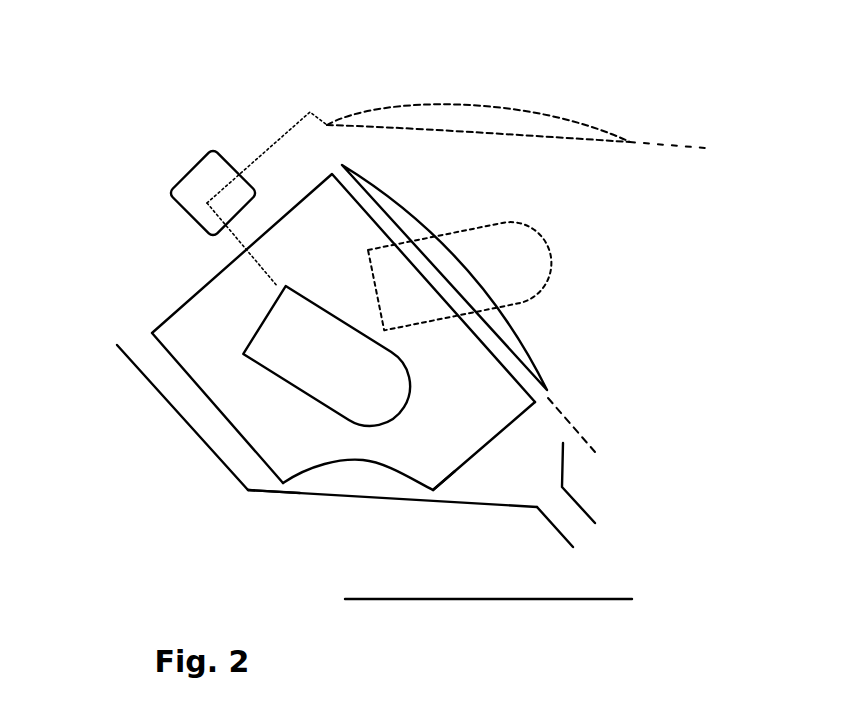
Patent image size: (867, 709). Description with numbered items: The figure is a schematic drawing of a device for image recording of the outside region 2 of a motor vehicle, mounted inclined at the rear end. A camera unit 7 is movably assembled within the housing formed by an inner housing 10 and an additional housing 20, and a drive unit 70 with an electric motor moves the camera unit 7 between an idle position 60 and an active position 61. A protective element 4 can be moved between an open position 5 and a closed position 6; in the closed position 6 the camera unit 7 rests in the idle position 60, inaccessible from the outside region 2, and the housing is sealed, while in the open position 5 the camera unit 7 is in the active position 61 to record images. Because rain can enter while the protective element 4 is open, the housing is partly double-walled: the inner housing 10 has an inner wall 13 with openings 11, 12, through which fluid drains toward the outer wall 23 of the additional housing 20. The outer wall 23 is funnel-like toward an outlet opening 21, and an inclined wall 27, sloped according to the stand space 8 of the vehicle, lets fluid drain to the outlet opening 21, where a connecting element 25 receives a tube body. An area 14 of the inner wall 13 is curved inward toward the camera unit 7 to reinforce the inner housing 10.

The outside region 2 is at (662, 49).
The protective element 4 is at (473, 135).
The open position 5 is at (675, 148).
The closed position 6 is at (582, 433).
The camera unit 7 is at (380, 307).
The stand space 8 is at (613, 598).
The inner housing 10 is at (200, 393).
The opening 11 is at (277, 492).
The opening 12 is at (433, 493).
The inner wall 13 is at (462, 473).
The area 14 is at (360, 461).
The additional housing 20 is at (230, 475).
The outlet opening 21 is at (553, 508).
The outer wall 23 is at (496, 498).
The connecting element 25 is at (585, 508).
The inclined wall 27 is at (327, 495).
The idle position 60 is at (243, 353).
The active position 61 is at (543, 260).
The drive unit 70 is at (193, 167).